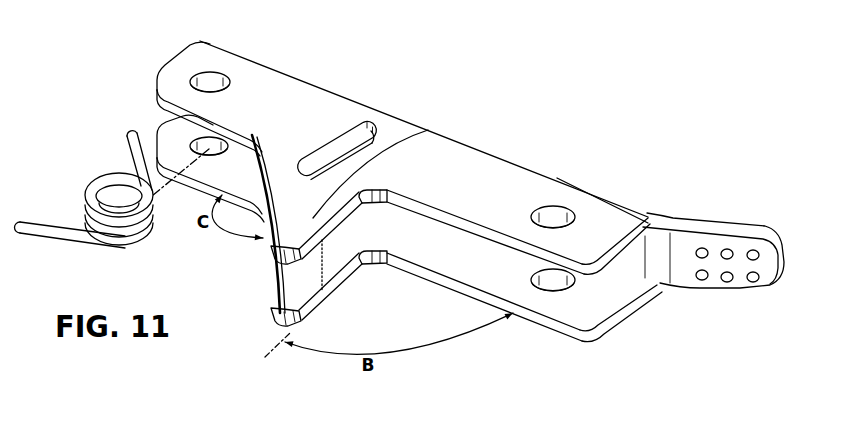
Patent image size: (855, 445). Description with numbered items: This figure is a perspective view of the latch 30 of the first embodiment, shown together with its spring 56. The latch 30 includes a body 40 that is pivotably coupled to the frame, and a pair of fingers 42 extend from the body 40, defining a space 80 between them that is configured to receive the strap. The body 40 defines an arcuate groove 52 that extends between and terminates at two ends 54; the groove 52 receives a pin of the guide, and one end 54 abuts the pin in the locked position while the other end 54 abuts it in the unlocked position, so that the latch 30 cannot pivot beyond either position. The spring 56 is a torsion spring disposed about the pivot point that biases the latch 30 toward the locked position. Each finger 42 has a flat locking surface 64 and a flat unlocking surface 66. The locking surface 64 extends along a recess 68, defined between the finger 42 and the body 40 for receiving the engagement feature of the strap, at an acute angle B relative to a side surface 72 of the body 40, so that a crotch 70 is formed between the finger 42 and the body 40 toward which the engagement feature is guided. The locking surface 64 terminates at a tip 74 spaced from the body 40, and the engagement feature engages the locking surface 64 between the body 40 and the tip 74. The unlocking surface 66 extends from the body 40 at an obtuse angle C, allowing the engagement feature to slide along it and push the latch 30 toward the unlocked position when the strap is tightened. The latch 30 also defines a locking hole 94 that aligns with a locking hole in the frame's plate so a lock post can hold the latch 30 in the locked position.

The latch 30 is at (489, 150).
The body 40 is at (428, 143).
The finger 42 is at (430, 143).
The groove 52 is at (328, 148).
The end 54 is at (296, 168).
The spring 56 is at (52, 222).
The locking surface 64 is at (418, 205).
The unlocking surface 66 is at (257, 148).
The recess 68 is at (468, 362).
The crotch 70 is at (370, 190).
The side surface 72 is at (465, 223).
The tip 74 is at (287, 247).
The space 80 is at (328, 274).
The locking hole 94 is at (567, 207).